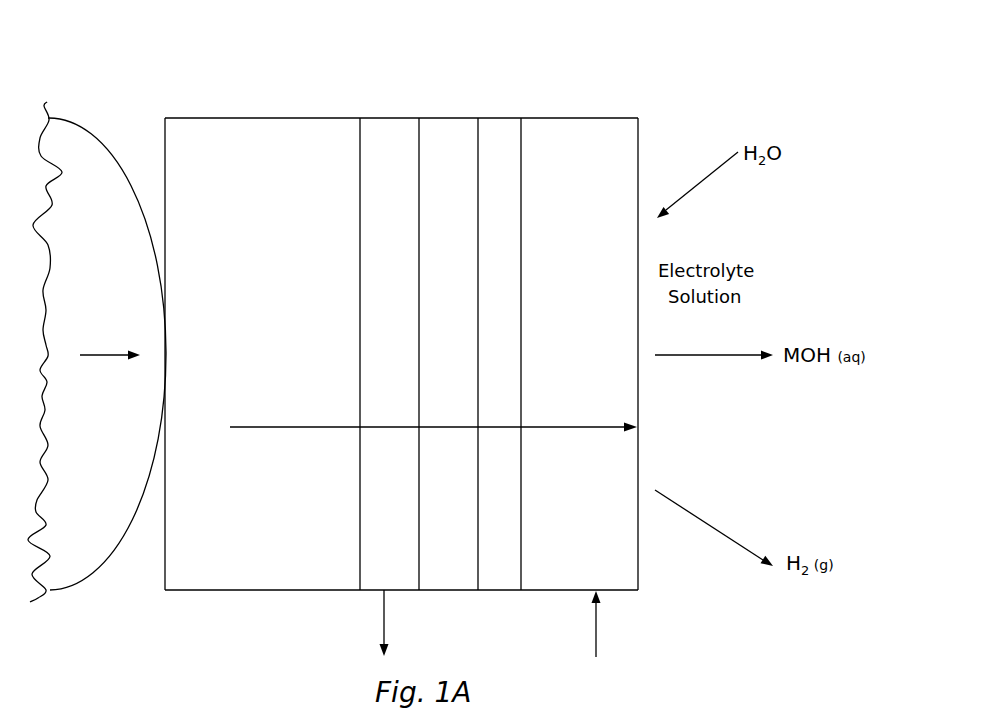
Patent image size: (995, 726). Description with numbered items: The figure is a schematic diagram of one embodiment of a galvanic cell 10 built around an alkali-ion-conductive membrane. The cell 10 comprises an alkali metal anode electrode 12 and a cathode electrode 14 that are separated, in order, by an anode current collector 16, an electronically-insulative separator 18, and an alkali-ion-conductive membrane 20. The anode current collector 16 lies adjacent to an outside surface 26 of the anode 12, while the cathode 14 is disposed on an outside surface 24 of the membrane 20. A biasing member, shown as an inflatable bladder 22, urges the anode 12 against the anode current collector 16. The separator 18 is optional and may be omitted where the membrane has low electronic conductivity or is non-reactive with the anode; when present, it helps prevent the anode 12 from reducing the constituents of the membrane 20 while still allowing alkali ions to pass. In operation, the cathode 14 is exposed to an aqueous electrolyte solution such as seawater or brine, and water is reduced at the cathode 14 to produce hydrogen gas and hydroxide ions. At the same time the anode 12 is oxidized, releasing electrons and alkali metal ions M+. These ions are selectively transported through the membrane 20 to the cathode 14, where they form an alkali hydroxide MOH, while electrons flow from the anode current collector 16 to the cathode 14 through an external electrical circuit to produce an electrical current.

The galvanic cell 10 is at (190, 80).
The alkali metal anode electrode 12 is at (256, 366).
The cathode electrode 14 is at (567, 366).
The anode current collector 16 is at (378, 366).
The electronically-insulative separator 18 is at (436, 366).
The alkali-ion-conductive membrane 20 is at (488, 366).
The inflatable bladder 22 is at (96, 332).
The outside surface of the ion-conductive membrane 24 is at (521, 148).
The outside surface of the anode 26 is at (360, 148).